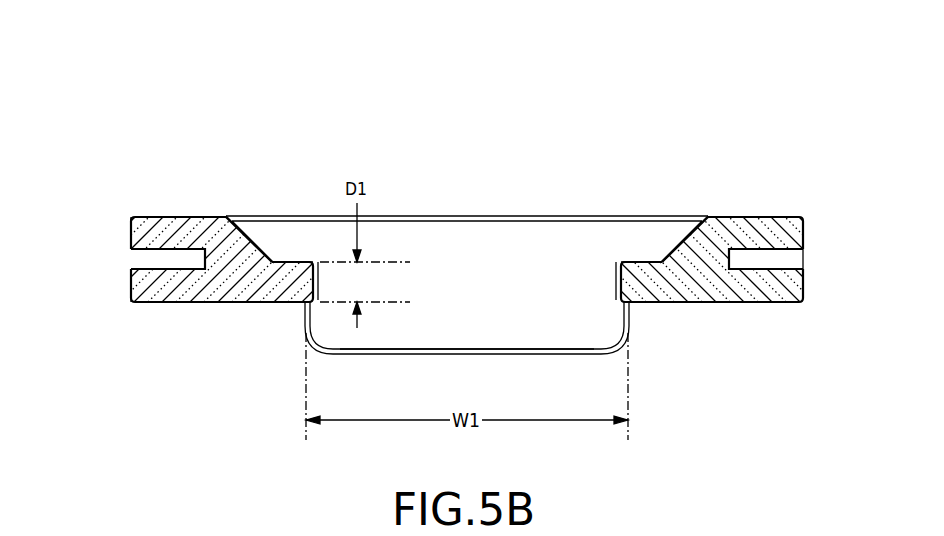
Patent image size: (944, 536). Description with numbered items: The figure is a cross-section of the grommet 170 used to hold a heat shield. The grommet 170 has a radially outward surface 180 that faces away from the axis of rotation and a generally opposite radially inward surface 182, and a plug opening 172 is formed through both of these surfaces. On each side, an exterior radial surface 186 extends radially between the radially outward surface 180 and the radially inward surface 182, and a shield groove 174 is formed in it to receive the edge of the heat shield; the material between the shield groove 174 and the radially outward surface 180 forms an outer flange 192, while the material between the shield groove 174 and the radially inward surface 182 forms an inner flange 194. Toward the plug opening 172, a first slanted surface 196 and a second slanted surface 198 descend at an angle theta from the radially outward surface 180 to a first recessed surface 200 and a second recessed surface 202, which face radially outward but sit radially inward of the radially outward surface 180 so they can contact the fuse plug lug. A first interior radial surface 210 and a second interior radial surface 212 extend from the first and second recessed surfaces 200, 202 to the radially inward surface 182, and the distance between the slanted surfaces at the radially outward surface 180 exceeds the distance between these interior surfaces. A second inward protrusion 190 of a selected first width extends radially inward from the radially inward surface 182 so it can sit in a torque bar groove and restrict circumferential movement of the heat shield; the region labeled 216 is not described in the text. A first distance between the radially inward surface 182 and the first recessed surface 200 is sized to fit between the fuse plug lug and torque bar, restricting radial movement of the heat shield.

The grommet 170 is at (134, 86).
The plug opening 172 is at (485, 203).
The shield groove 174 is at (136, 259).
The radially outward surface 180 is at (162, 216).
The radially inward surface 182 is at (248, 303).
The exterior radial surface 186 is at (803, 228).
The second inward protrusion 190 is at (650, 305).
The outer flange 192 is at (114, 216).
The inner flange 194 is at (114, 269).
The first slanted surface 196 is at (266, 243).
The second slanted surface 198 is at (690, 232).
The first recessed surface 200 is at (297, 262).
The second recessed surface 202 is at (624, 262).
The first interior radial surface 210 is at (318, 283).
The second interior radial surface 212 is at (620, 284).
The channel bottom 216 is at (498, 314).